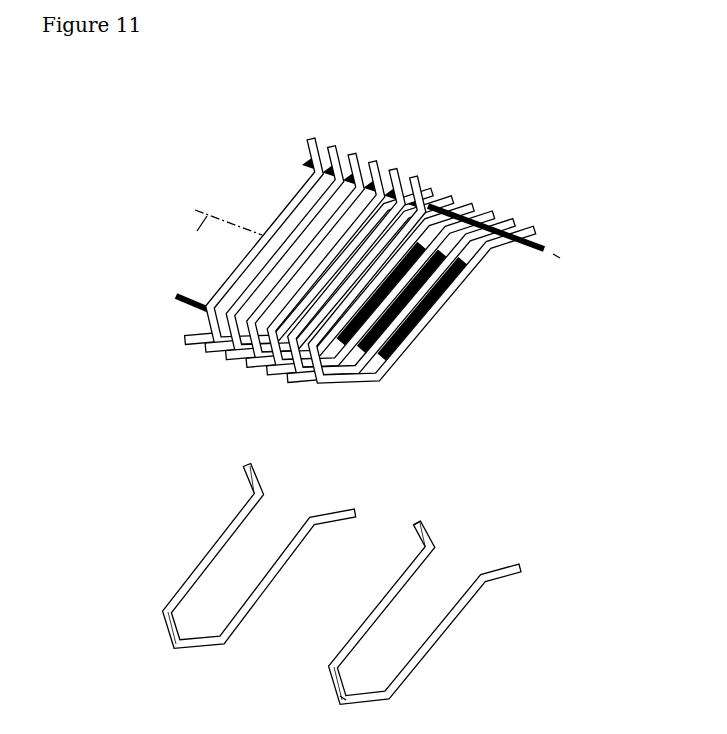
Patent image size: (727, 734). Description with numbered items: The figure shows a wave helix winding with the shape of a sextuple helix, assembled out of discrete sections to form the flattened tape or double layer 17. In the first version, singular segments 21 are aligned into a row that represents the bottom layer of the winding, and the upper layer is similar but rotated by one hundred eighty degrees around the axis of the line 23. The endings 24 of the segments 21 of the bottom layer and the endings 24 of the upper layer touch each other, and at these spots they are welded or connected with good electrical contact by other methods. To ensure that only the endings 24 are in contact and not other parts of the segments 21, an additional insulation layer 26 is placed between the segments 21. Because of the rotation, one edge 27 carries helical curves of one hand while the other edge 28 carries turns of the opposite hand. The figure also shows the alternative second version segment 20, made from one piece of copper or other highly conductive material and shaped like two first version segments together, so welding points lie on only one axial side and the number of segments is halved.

The double layer 17 is at (525, 333).
The second version segment 20 is at (445, 637).
The segment 21 is at (410, 337).
The line 23 is at (217, 228).
The endings 24 is at (305, 139).
The additional insulation layer 26 is at (181, 300).
The edge 27 is at (555, 255).
The other edge 28 is at (413, 402).